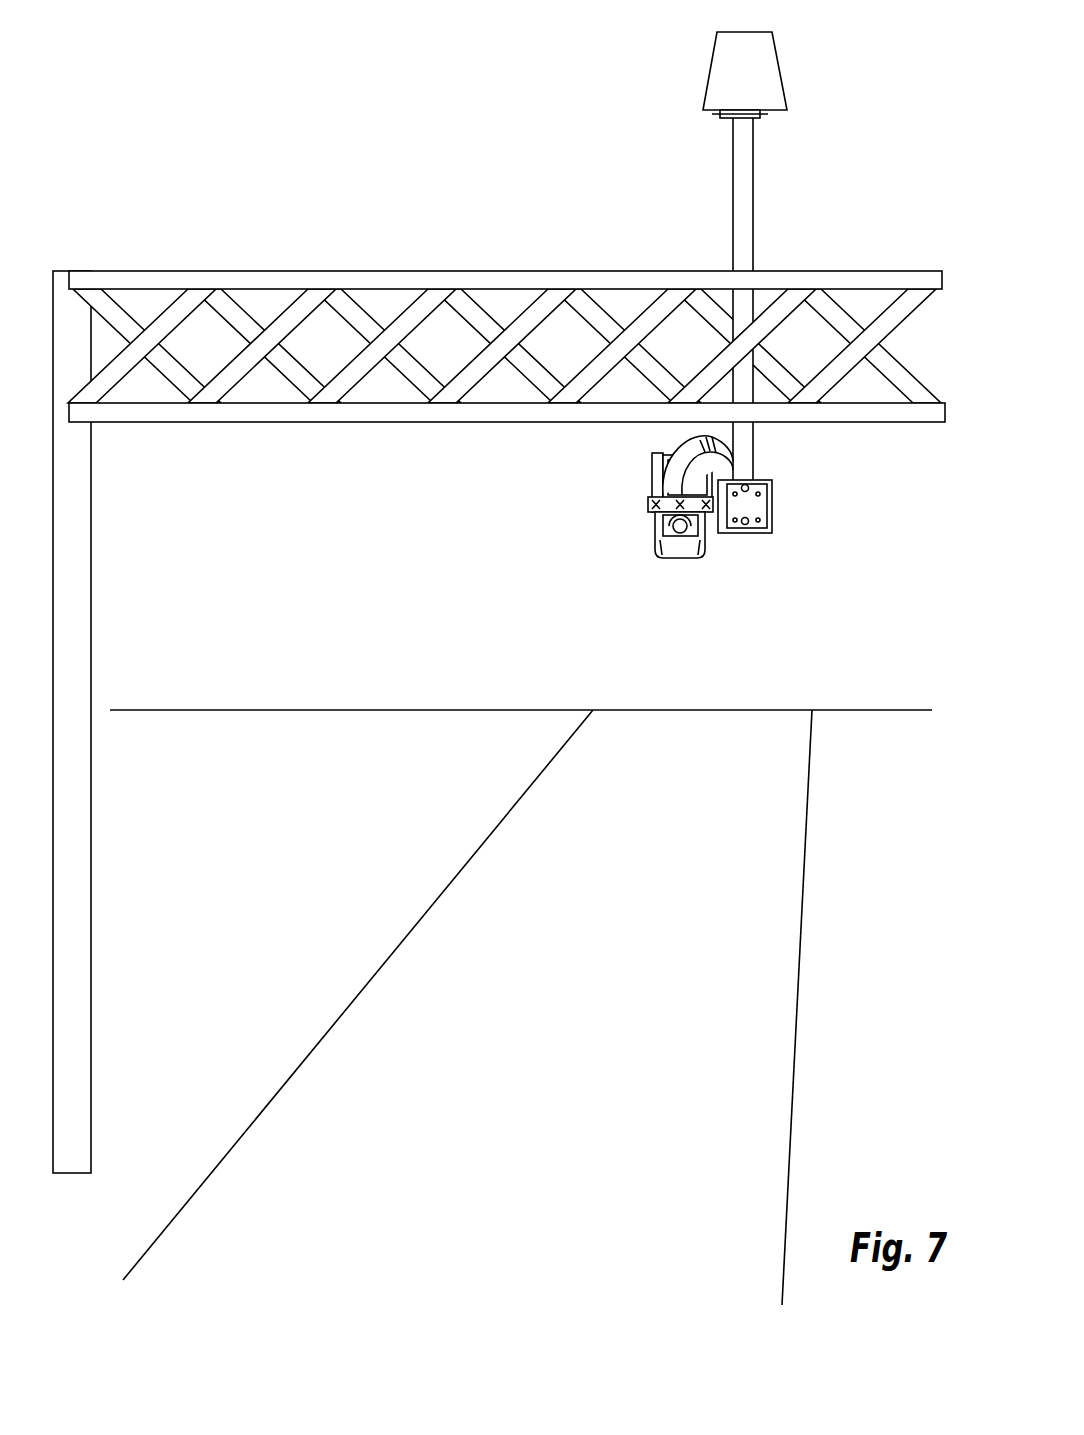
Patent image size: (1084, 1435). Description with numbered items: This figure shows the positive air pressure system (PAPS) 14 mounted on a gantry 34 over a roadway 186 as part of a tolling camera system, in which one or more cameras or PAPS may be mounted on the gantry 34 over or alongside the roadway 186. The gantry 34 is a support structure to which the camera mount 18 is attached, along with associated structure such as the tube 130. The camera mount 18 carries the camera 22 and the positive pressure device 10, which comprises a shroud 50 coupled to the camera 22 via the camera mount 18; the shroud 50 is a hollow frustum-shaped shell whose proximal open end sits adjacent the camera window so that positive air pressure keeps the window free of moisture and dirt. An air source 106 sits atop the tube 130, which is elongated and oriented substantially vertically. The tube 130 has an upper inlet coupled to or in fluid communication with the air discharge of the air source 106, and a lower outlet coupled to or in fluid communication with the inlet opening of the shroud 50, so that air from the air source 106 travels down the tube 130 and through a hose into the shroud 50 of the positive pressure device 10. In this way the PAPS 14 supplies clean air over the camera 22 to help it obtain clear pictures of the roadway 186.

The positive pressure device 10 is at (635, 523).
The positive air pressure system 14 is at (700, 256).
The camera mount 18 is at (707, 540).
The camera 22 is at (651, 455).
The gantry 34 is at (264, 270).
The shroud 50 is at (687, 559).
The air source 106 is at (694, 66).
The tube 130 is at (750, 228).
The roadway 186 is at (370, 1038).